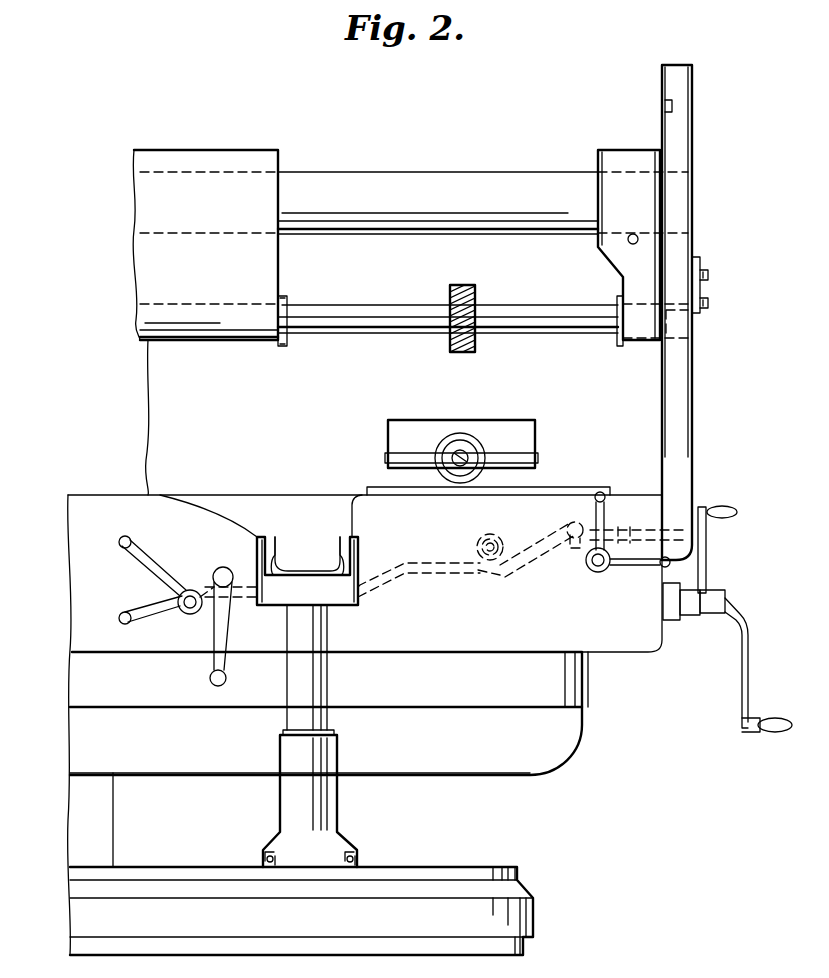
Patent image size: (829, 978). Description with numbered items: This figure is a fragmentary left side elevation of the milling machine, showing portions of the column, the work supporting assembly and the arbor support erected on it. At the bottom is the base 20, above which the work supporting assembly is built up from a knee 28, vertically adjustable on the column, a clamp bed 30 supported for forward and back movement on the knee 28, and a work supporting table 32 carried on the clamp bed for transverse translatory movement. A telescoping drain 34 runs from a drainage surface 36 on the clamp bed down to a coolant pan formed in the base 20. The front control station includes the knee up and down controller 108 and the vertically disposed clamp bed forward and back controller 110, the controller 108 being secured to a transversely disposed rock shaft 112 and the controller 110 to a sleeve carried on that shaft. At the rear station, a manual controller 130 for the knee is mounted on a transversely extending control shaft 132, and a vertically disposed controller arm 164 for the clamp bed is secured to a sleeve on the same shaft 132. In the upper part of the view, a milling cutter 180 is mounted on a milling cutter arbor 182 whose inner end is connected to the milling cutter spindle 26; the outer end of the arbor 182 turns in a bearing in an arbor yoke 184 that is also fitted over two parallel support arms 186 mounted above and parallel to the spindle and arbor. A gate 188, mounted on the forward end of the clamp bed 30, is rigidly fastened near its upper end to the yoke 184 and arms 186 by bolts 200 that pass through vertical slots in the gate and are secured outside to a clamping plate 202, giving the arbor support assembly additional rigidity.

The base 20 is at (425, 872).
The milling cutter spindle 26 is at (138, 303).
The knee 28 is at (556, 727).
The clamp bed 30 is at (622, 628).
The work supporting table 32 is at (403, 432).
The telescoping drain 34 is at (305, 780).
The drainage surface 36 is at (288, 566).
The front knee up and down controller 108 is at (640, 577).
The front clamp bed forward and back power controller 110 is at (604, 497).
The rock shaft 112 is at (596, 576).
The manual controller 130 is at (157, 622).
The control shaft 132 is at (178, 602).
The controller arm 164 is at (152, 566).
The milling cutter 180 is at (478, 293).
The milling cutter arbor 182 is at (370, 320).
The arbor yoke 184 is at (612, 155).
The support arms 186 is at (402, 182).
The gate 188 is at (686, 374).
The bolts 200 is at (708, 283).
The clamping plate 202 is at (704, 263).